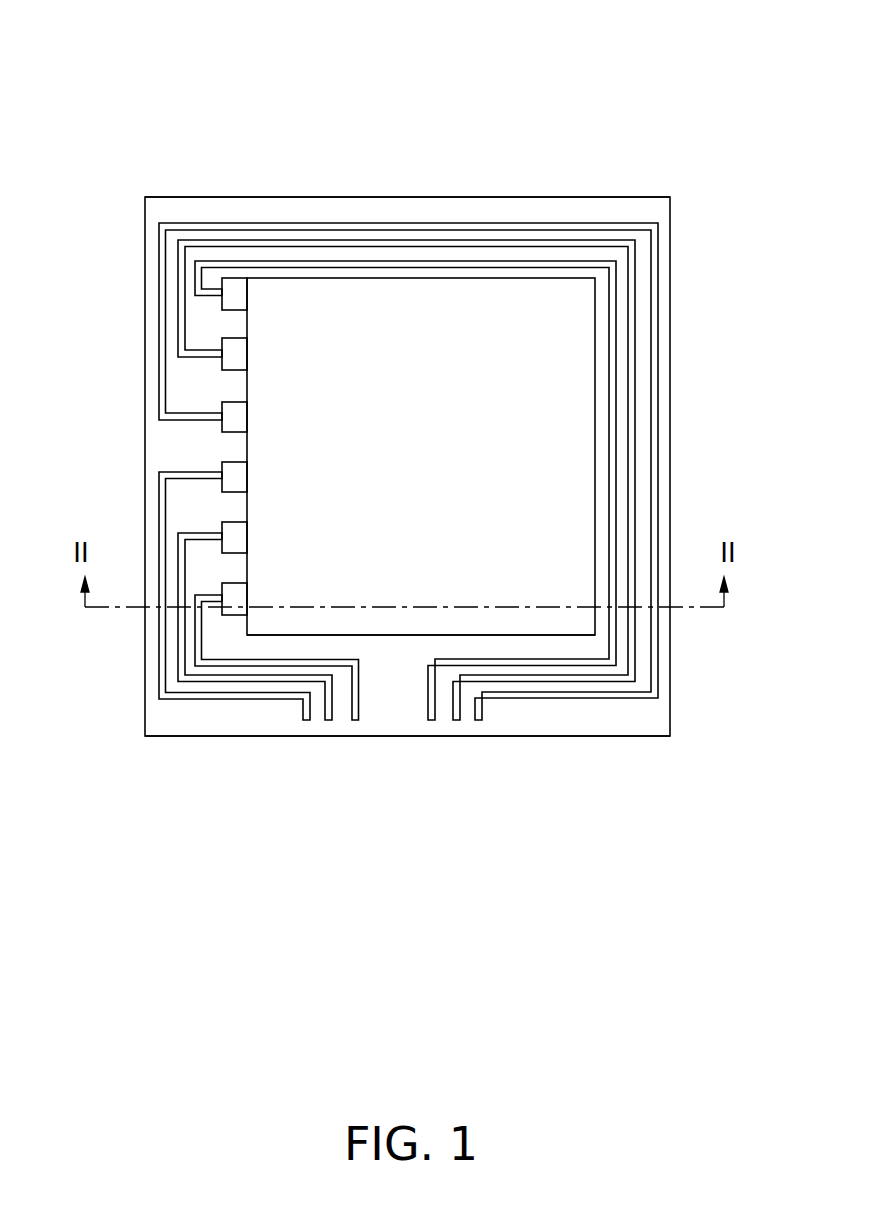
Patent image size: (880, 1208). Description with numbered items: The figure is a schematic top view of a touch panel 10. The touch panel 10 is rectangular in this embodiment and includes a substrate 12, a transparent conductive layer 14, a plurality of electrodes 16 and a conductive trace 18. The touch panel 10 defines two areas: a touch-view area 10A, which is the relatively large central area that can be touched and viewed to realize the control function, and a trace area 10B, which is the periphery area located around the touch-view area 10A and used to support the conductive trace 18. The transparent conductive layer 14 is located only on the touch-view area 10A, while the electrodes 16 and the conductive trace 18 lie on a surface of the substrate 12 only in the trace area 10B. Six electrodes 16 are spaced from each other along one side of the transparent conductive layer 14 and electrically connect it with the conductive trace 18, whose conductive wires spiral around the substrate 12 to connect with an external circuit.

The touch panel 10 is at (350, 47).
The touch-view area 10A is at (412, 625).
The trace area 10B is at (445, 212).
The substrate 12 is at (676, 233).
The transparent conductive layer 14 is at (525, 432).
The electrode 16 is at (232, 298).
The conductive trace 18 is at (373, 263).